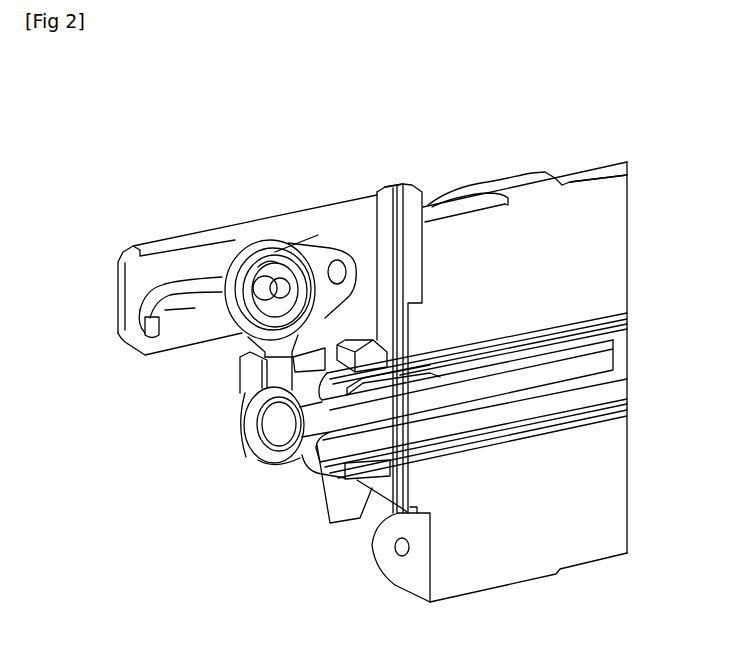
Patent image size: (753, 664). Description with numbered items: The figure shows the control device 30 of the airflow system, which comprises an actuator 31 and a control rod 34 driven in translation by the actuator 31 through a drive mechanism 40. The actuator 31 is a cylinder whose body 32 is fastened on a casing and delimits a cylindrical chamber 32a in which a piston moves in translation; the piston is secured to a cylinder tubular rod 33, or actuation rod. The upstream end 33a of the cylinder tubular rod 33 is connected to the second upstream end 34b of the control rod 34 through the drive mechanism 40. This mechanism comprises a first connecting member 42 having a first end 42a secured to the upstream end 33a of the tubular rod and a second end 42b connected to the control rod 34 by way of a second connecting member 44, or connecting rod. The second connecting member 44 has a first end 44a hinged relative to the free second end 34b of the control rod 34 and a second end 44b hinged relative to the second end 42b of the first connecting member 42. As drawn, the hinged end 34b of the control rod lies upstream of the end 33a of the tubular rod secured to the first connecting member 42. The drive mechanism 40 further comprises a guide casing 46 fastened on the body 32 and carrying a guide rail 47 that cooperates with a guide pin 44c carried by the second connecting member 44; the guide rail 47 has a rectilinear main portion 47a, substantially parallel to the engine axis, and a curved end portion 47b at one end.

The control device 30 is at (544, 103).
The actuator 31 is at (602, 152).
The body 32 is at (617, 201).
The cylindrical chamber 32a is at (612, 319).
The cylinder tubular rod 33 is at (615, 400).
The upstream end 33a is at (335, 477).
The control rod 34 is at (615, 357).
The second upstream end 34b is at (262, 456).
The drive mechanism 40 is at (154, 466).
The first connecting member 42 is at (363, 313).
The first end 42a is at (362, 483).
The second end 42b is at (376, 205).
The second connecting member 44 is at (243, 375).
The first end 44a is at (272, 428).
The second end 44b is at (320, 267).
The guide pin 44c is at (275, 288).
The guide casing 46 is at (113, 287).
The guide rail 47 is at (202, 305).
The rectilinear main portion 47a is at (140, 315).
The end portion 47b is at (125, 333).